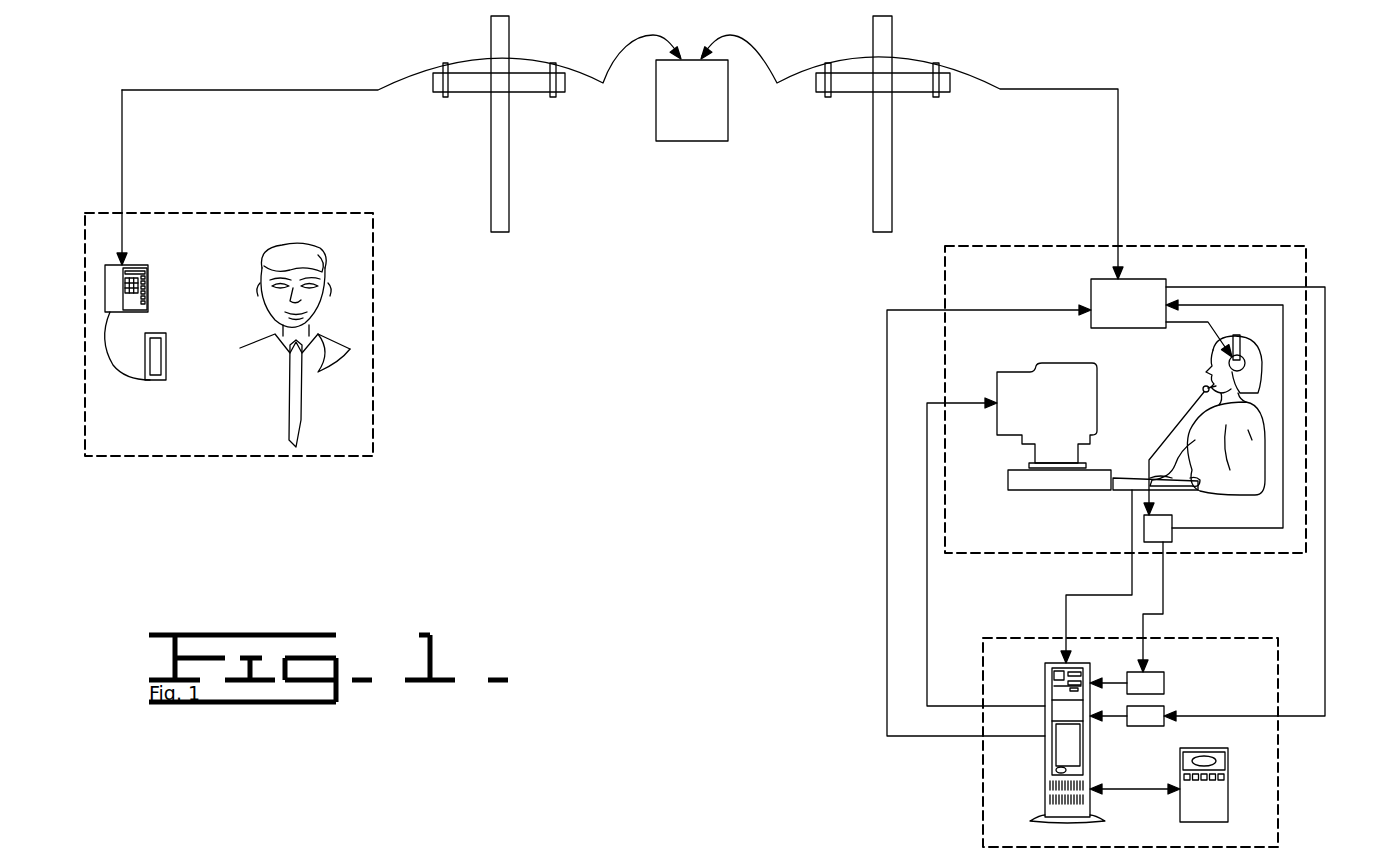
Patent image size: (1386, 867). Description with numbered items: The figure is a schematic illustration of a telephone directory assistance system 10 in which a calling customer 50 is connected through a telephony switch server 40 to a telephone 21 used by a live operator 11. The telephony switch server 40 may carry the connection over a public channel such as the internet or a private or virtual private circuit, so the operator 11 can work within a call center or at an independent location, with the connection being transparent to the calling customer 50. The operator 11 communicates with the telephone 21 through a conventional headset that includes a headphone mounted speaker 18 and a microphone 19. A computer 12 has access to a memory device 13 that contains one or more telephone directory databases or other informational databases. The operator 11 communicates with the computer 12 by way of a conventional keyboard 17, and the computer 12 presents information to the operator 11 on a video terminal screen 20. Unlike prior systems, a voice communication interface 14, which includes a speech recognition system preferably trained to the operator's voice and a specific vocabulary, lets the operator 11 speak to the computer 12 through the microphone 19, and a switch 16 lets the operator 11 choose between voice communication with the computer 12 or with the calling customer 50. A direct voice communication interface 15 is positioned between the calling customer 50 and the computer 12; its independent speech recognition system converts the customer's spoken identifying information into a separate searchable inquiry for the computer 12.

The telephone directory assistance system 10 is at (805, 675).
The live operator 11 is at (1263, 465).
The computer 12 is at (1045, 748).
The memory device 13 is at (1180, 812).
The voice communication interface 14 is at (1164, 686).
The direct voice communication interface 15 is at (1146, 726).
The switch 16 is at (1165, 508).
The keyboard 17 is at (1118, 492).
The headphone mounted speaker 18 is at (1246, 360).
The microphone 19 is at (1204, 385).
The video terminal screen 20 is at (1097, 395).
The telephone 21 is at (1148, 279).
The telephony switch server 40 is at (690, 141).
The calling customer 50 is at (350, 410).